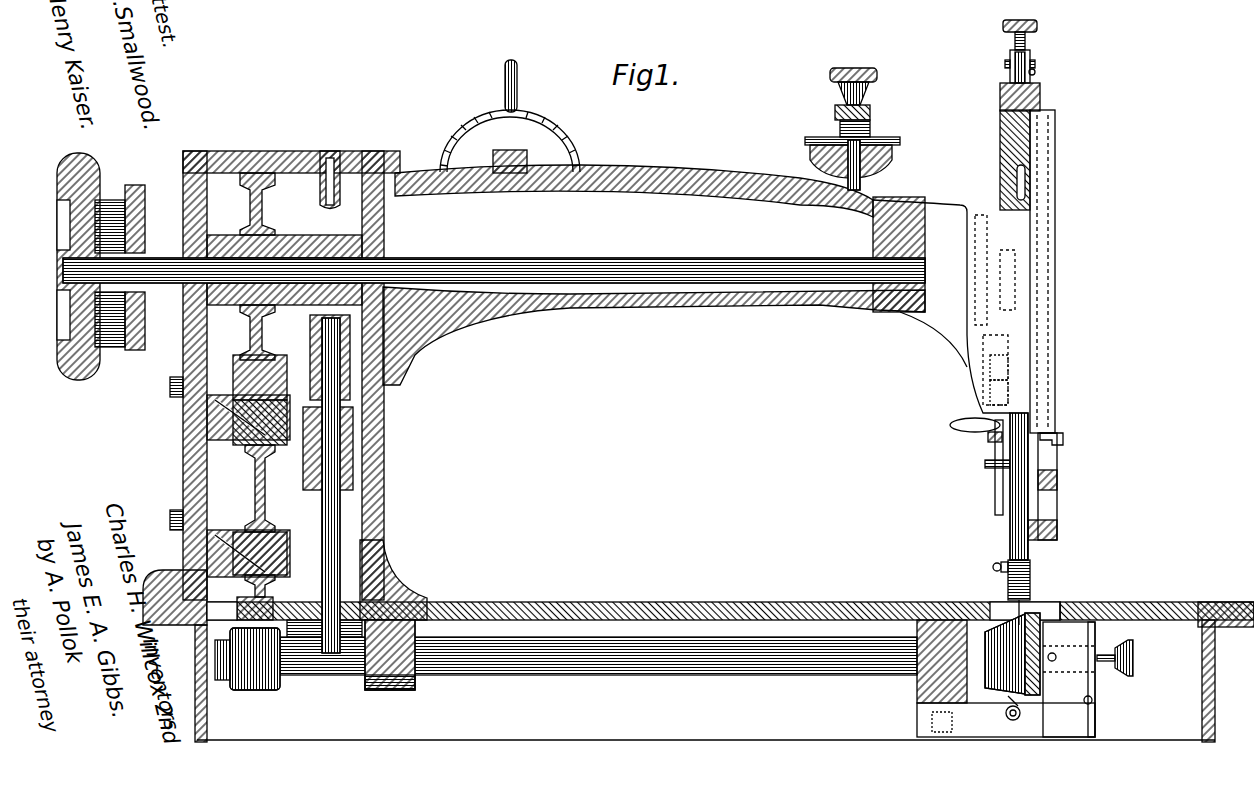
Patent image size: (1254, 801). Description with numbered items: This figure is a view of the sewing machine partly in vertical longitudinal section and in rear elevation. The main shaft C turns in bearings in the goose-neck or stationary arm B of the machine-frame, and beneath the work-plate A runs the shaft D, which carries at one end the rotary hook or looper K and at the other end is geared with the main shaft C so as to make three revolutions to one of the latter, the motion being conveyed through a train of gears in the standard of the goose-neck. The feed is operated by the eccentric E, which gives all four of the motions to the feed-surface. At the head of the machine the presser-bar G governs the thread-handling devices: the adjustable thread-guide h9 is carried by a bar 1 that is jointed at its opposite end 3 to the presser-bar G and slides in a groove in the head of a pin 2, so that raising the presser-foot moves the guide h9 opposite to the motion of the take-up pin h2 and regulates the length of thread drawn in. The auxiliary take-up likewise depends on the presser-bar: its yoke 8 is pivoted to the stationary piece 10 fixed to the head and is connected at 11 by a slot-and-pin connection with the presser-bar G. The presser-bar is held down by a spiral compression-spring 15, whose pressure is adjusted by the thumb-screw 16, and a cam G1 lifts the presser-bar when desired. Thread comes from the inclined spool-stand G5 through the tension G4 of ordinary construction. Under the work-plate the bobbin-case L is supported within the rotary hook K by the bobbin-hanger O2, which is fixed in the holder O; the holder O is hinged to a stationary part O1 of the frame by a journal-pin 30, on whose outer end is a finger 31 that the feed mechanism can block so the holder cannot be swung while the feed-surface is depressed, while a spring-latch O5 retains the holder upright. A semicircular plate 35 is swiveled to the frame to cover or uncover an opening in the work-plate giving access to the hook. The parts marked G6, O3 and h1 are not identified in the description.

The work-plate A is at (633, 602).
The goose-neck or stationary arm B is at (696, 281).
The main shaft C is at (680, 259).
The shaft D is at (720, 665).
The eccentric E is at (312, 315).
The presser-bar G is at (1012, 522).
The cam G1 is at (995, 496).
The tension G4 is at (864, 129).
The spool-stand G5 is at (510, 116).
The spring stud G6 is at (1036, 78).
The rotary hook or looper K is at (999, 658).
The bobbin-case L is at (1019, 700).
The holder O is at (1069, 679).
The stationary part of the frame O1 is at (1006, 678).
The bobbin-hanger O2 is at (1040, 650).
The adjusting knob O3 is at (1110, 652).
The spring-latch O5 is at (1097, 684).
The bar 1 is at (1050, 462).
The pin 2 is at (1050, 486).
The joint 3 is at (1050, 523).
The adjustable yoke 8 is at (1010, 52).
The stationary piece 10 is at (1041, 98).
The slot-and-pin connection 11 is at (1034, 66).
The spiral compression-spring 15 is at (1000, 156).
The thumb-screw 16 is at (1020, 25).
The journal-pin 30 is at (1013, 722).
The finger 31 is at (1005, 710).
The semicircular plate 35 is at (1133, 603).
The lever h1 is at (990, 335).
The pin h2 is at (990, 368).
The shifting or adjustable thread-guide h9 is at (1063, 436).